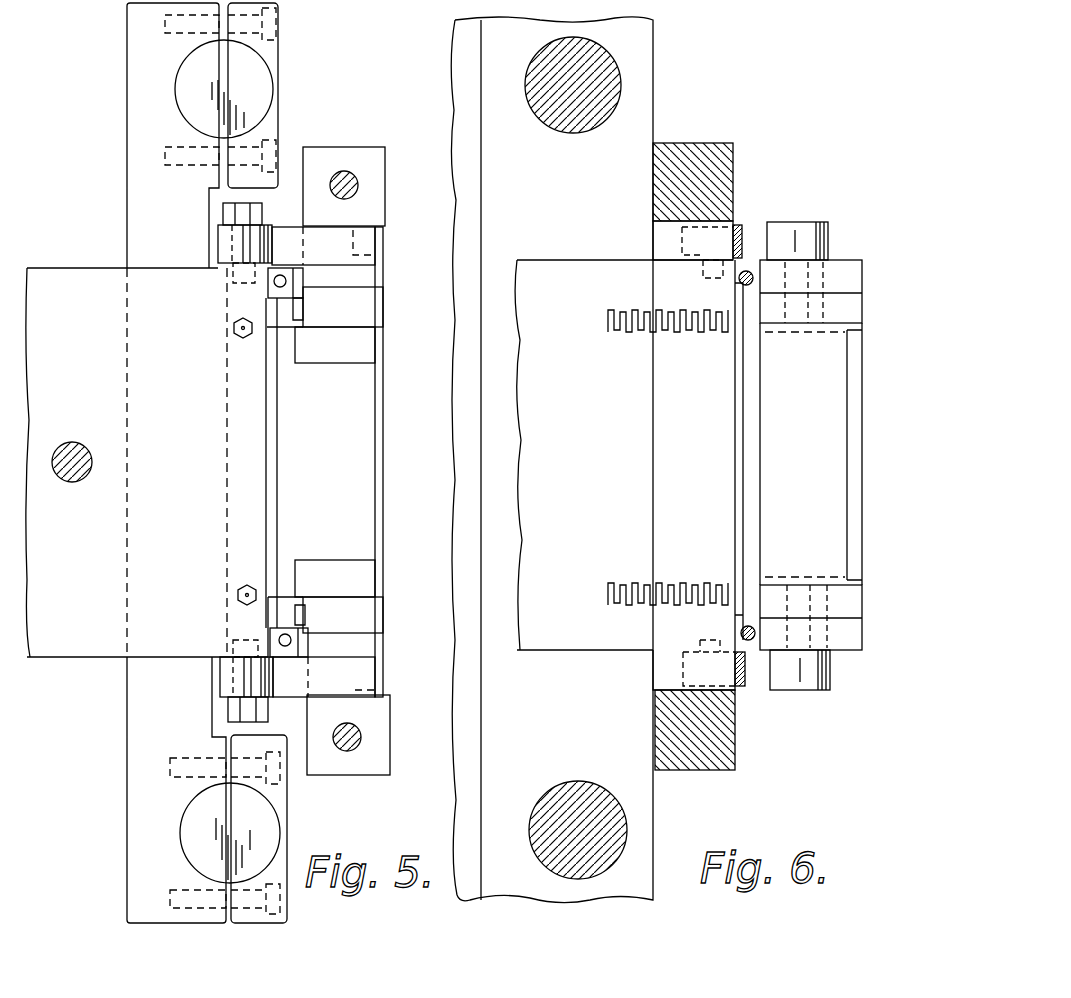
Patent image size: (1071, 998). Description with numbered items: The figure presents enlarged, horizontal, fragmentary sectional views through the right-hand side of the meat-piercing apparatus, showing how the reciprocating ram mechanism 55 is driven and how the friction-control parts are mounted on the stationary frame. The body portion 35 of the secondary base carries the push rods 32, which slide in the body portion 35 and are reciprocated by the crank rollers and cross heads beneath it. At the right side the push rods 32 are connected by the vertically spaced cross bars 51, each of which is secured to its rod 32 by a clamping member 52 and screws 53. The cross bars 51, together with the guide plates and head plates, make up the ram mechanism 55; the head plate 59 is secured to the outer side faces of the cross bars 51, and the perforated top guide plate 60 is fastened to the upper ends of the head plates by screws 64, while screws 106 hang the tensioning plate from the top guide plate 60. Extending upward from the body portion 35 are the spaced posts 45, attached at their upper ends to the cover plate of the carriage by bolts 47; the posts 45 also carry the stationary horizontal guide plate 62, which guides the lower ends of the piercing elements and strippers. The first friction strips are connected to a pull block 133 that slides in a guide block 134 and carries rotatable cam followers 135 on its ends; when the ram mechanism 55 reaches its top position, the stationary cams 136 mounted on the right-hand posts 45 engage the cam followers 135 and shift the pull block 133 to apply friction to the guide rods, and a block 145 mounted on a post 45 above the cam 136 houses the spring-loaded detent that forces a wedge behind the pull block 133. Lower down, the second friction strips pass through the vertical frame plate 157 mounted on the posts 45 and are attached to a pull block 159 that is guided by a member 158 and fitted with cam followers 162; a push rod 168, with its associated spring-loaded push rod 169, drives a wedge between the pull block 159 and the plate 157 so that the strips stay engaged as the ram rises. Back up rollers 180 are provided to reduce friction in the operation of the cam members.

In FIG. 5, the push rod 32 is at (186, 88).
In FIG. 6, the push rod 32 is at (610, 62).
In FIG. 6, the body portion 35 is at (482, 108).
In FIG. 5, the spaced post 45 is at (357, 152).
In FIG. 6, the spaced post 45 is at (683, 144).
In FIG. 5, the bolt 47 is at (358, 183).
In FIG. 5, the cross bar 51 is at (140, 207).
In FIG. 5, the clamping member 52 is at (275, 61).
In FIG. 5, the screw 53 is at (278, 24).
In FIG. 5, the ram mechanism 55 is at (112, 265).
In FIG. 5, the head plate 59 is at (225, 435).
In FIG. 5, the top guide plate 60 is at (47, 656).
In FIG. 6, the guide plate 62 is at (552, 434).
In FIG. 5, the screw 64 is at (238, 328).
In FIG. 5, the screw 106 is at (68, 483).
In FIG. 5, the pull block 133 is at (355, 348).
In FIG. 5, the guide block 134 is at (365, 305).
In FIG. 5, the cam follower 135 is at (375, 260).
In FIG. 5, the stationary cam 136 is at (365, 236).
In FIG. 5, the block 145 is at (268, 293).
In FIG. 6, the vertical frame plate 157 is at (672, 480).
In FIG. 6, the guide member 158 is at (825, 358).
In FIG. 6, the pull block 159 is at (855, 303).
In FIG. 6, the cam follower 162 is at (822, 238).
In FIG. 6, the push rod 168 is at (739, 279).
In FIG. 6, the push rod 169 is at (750, 418).
In FIG. 5, the back up roller 180 is at (228, 241).
In FIG. 6, the back up roller 180 is at (683, 229).